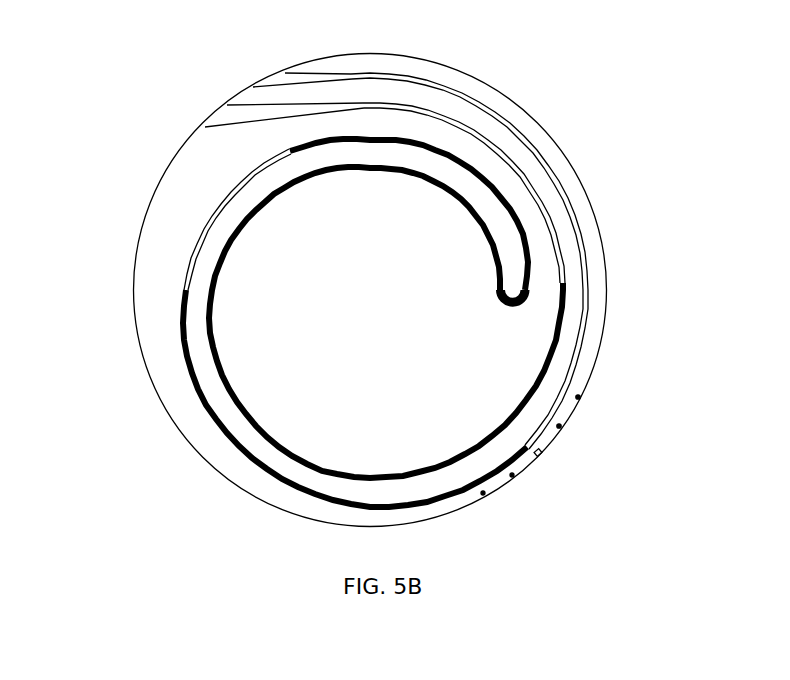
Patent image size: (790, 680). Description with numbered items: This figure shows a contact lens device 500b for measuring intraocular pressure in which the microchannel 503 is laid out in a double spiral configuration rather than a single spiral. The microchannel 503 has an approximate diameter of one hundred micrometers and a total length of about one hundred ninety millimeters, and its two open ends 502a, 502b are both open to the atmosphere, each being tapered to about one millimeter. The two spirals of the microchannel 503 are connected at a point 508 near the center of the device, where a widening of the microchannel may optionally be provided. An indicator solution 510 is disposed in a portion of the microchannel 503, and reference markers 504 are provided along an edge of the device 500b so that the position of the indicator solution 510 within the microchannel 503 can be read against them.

The contact lens device 500b is at (203, 462).
The first open end of the microchannel 502a is at (442, 225).
The second open end of the microchannel 502b is at (205, 127).
The microchannel 503 is at (588, 245).
The reference markers 504 is at (578, 397).
The connection point of the two microchannel spirals 508 is at (528, 305).
The indicator solution 510 is at (180, 277).